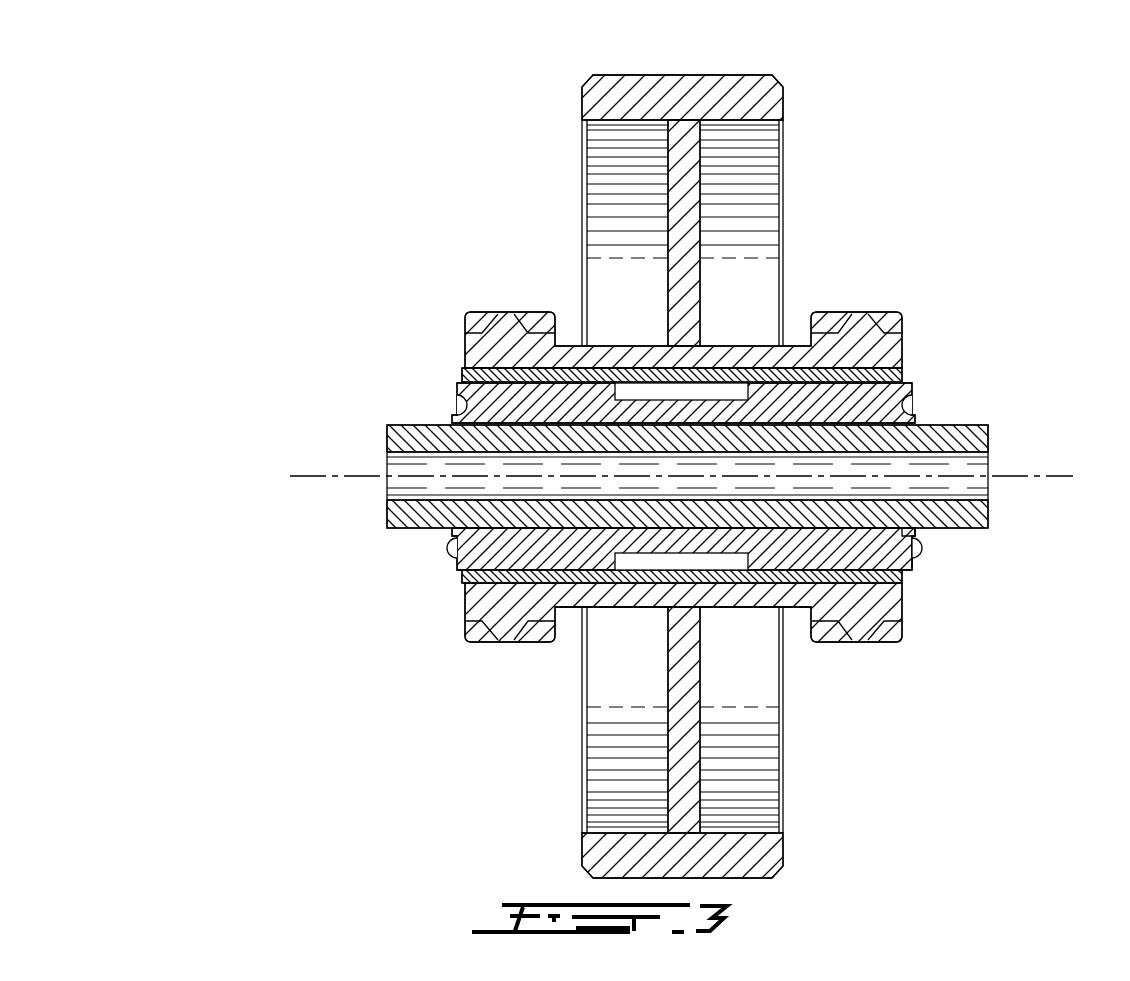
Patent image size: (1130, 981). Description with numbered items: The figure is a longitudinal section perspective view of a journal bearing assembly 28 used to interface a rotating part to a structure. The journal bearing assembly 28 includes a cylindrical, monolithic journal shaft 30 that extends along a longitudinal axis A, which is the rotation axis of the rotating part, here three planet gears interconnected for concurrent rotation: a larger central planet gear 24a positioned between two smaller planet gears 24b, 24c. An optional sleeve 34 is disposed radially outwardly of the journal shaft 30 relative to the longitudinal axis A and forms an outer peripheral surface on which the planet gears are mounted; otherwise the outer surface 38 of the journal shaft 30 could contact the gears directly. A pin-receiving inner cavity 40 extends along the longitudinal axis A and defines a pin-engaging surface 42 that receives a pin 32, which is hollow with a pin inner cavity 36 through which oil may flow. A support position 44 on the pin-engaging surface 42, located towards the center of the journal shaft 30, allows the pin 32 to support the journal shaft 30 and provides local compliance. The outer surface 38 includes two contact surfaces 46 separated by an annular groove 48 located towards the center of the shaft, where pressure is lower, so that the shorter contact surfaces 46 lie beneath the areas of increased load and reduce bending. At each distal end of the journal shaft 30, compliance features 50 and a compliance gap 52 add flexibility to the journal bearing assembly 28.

The journal bearing assembly 28 is at (198, 155).
The central planet gear 24a is at (682, 110).
The planet gear 24b is at (515, 330).
The planet gear 24c is at (862, 330).
The contact surfaces 46 is at (730, 426).
The sleeve 34 is at (470, 377).
The journal shaft 30 is at (695, 396).
The annular groove 48 is at (705, 396).
The pin 32 is at (641, 471).
The support position 44 is at (445, 452).
The pin inner cavity 36 is at (400, 486).
The pin-receiving inner cavity 40 is at (659, 564).
The outer surface 38 is at (603, 532).
The pin-engaging surface 42 is at (560, 595).
The compliance gap 52 is at (905, 537).
The compliance features 50 is at (912, 553).
The longitudinal axis A is at (691, 478).